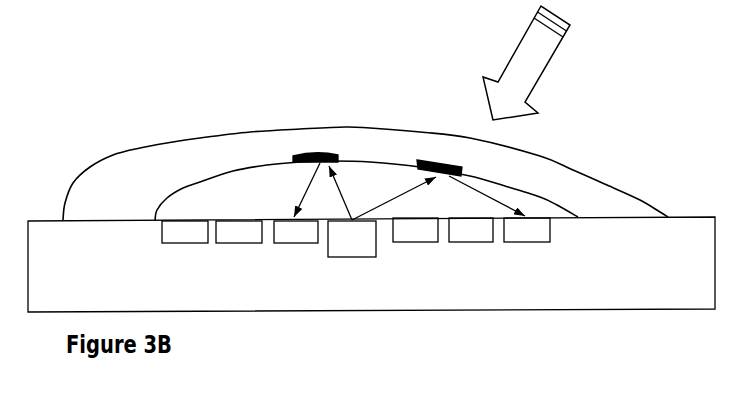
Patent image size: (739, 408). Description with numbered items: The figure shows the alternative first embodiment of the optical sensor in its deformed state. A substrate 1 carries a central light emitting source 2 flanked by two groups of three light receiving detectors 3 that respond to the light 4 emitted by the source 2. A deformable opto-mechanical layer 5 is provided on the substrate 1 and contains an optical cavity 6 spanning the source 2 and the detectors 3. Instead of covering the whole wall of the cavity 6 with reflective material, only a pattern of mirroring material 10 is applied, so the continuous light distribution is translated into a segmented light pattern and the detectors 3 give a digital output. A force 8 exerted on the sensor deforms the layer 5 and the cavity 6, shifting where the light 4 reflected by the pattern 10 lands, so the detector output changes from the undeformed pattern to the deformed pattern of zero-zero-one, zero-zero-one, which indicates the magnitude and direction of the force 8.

The substrate 1 is at (682, 262).
The light emitting source 2 is at (351, 258).
The light receiving detector 3 is at (538, 244).
The light 4 is at (507, 196).
The deformable opto-mechanical layer 5 is at (128, 188).
The optical cavity 6 is at (240, 198).
The force 8 is at (542, 76).
The mirroring material pattern 10 is at (435, 152).